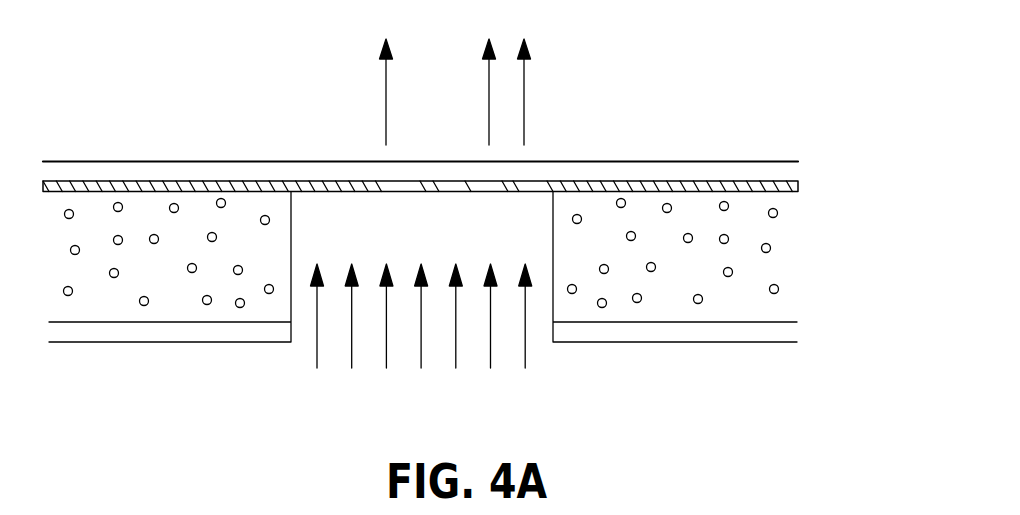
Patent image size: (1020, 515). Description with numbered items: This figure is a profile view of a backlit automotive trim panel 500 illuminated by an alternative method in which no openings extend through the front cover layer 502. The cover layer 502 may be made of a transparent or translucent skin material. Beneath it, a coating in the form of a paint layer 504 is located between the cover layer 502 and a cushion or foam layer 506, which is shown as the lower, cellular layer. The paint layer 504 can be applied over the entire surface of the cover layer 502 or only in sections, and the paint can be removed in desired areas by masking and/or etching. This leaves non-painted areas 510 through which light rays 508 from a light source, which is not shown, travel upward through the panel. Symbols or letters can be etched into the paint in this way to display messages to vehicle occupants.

The trim panel 500 is at (734, 71).
The front cover layer 502 is at (683, 160).
The paint layer 504 is at (799, 183).
The foam layer 506 is at (797, 291).
The light rays 508 is at (535, 377).
The non-painted areas 510 is at (398, 180).